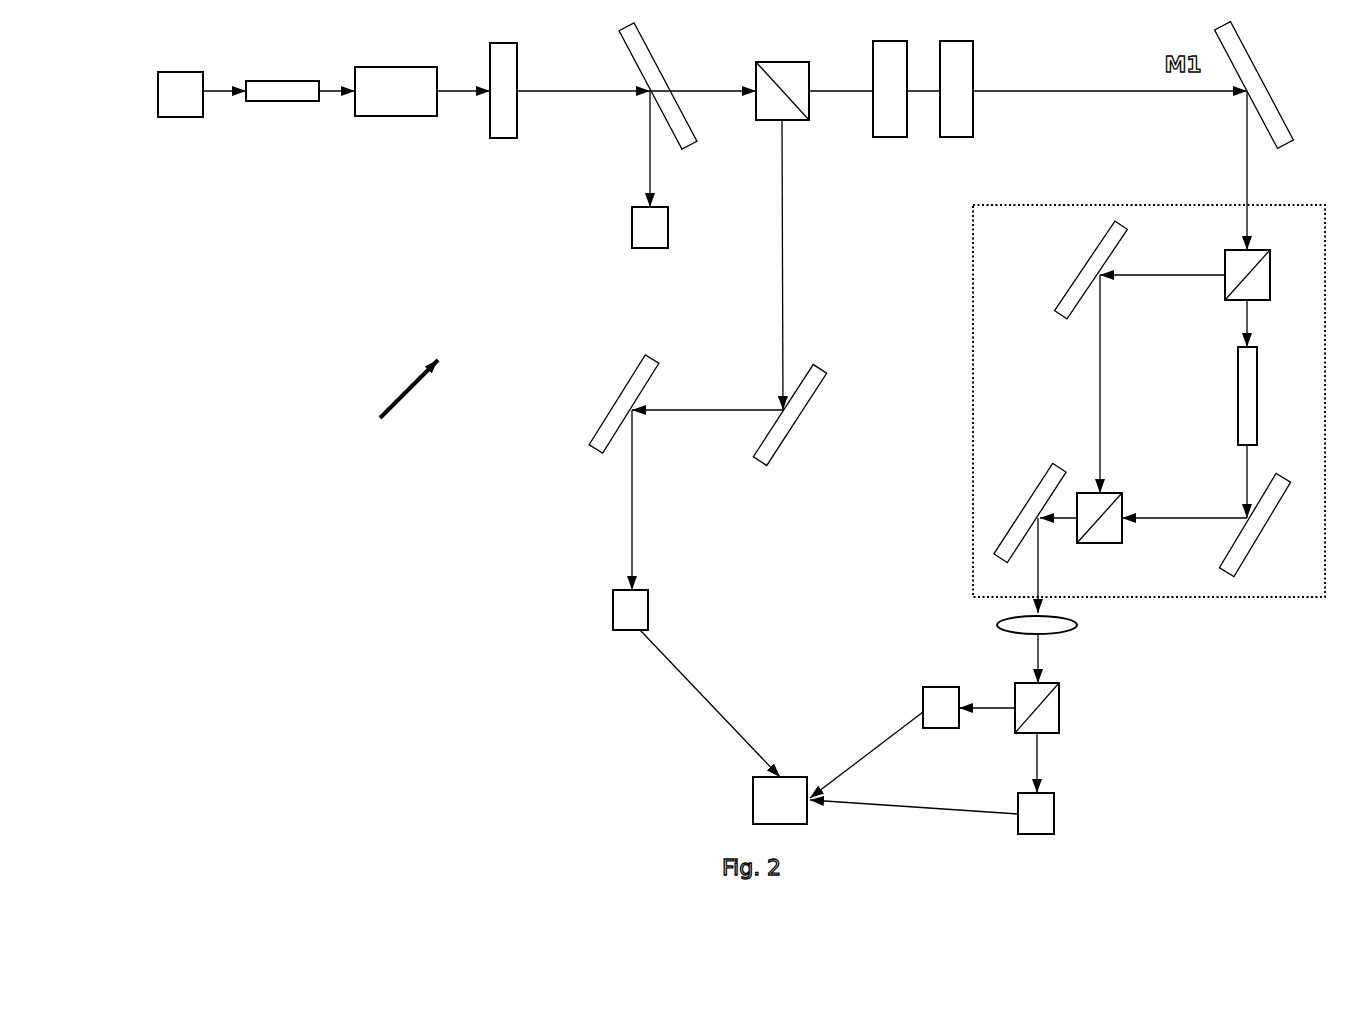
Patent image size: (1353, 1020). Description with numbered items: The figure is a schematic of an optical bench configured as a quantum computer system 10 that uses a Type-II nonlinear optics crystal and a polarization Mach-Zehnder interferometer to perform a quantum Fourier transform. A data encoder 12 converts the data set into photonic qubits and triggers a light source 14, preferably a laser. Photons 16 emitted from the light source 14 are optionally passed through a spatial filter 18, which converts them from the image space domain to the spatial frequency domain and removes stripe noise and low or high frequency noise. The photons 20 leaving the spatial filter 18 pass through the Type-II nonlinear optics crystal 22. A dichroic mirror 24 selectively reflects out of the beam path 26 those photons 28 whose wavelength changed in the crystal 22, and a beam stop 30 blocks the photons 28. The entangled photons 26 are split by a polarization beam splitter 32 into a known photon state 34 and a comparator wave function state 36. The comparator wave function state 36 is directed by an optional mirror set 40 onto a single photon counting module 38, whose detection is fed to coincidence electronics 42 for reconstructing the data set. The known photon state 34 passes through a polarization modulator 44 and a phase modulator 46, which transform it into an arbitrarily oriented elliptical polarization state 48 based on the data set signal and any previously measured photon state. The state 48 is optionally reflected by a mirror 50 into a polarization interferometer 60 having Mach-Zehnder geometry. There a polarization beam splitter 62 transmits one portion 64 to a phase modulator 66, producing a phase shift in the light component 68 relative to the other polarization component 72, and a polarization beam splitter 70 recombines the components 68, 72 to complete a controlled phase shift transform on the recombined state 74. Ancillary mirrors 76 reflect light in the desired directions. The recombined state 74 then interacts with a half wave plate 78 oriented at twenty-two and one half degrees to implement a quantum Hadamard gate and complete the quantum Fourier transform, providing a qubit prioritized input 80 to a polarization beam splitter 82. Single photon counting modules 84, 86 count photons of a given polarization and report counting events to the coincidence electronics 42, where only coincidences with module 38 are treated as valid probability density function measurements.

The system 10 is at (385, 410).
The data encoder 12 is at (180, 94).
The light source 14 is at (282, 91).
The photons 16 is at (335, 95).
The spatial filter 18 is at (396, 91).
The photons 20 is at (468, 97).
The Type-II nonlinear optics crystal 22 is at (503, 90).
The dichroic mirror 24 is at (658, 86).
The entangled photons 26 is at (710, 92).
The photons 28 is at (653, 150).
The beam stop 30 is at (650, 227).
The polarization beam splitter 32 is at (782, 79).
The known photon state 34 is at (842, 92).
The comparator wave function state 36 is at (780, 283).
The single photon counting module 38 is at (630, 520).
The mirror set 40 is at (632, 417).
The coincidence electronics 42 is at (780, 800).
The polarization modulator 44 is at (890, 89).
The phase modulator 46 is at (956, 89).
The arbitrarily oriented elliptical polarization state 48 is at (1083, 92).
The mirror 50 is at (1263, 100).
The polarization interferometer 60 is at (972, 284).
The polarization beam splitter 62 is at (1233, 195).
The portion 64 is at (1238, 322).
The phase modulator 66 is at (1221, 396).
The light component 68 is at (1192, 518).
The polarization beam splitter 70 is at (1106, 539).
The polarization component 72 is at (1100, 390).
The recombined state 74 is at (1040, 568).
The ancillary mirrors 76 is at (1140, 408).
The half wave plate 78 is at (1024, 629).
The qubit prioritized input 80 is at (1038, 655).
The polarization beam splitter 82 is at (1037, 708).
The single photon counting module 84 is at (969, 707).
The single photon counting module 86 is at (1036, 783).